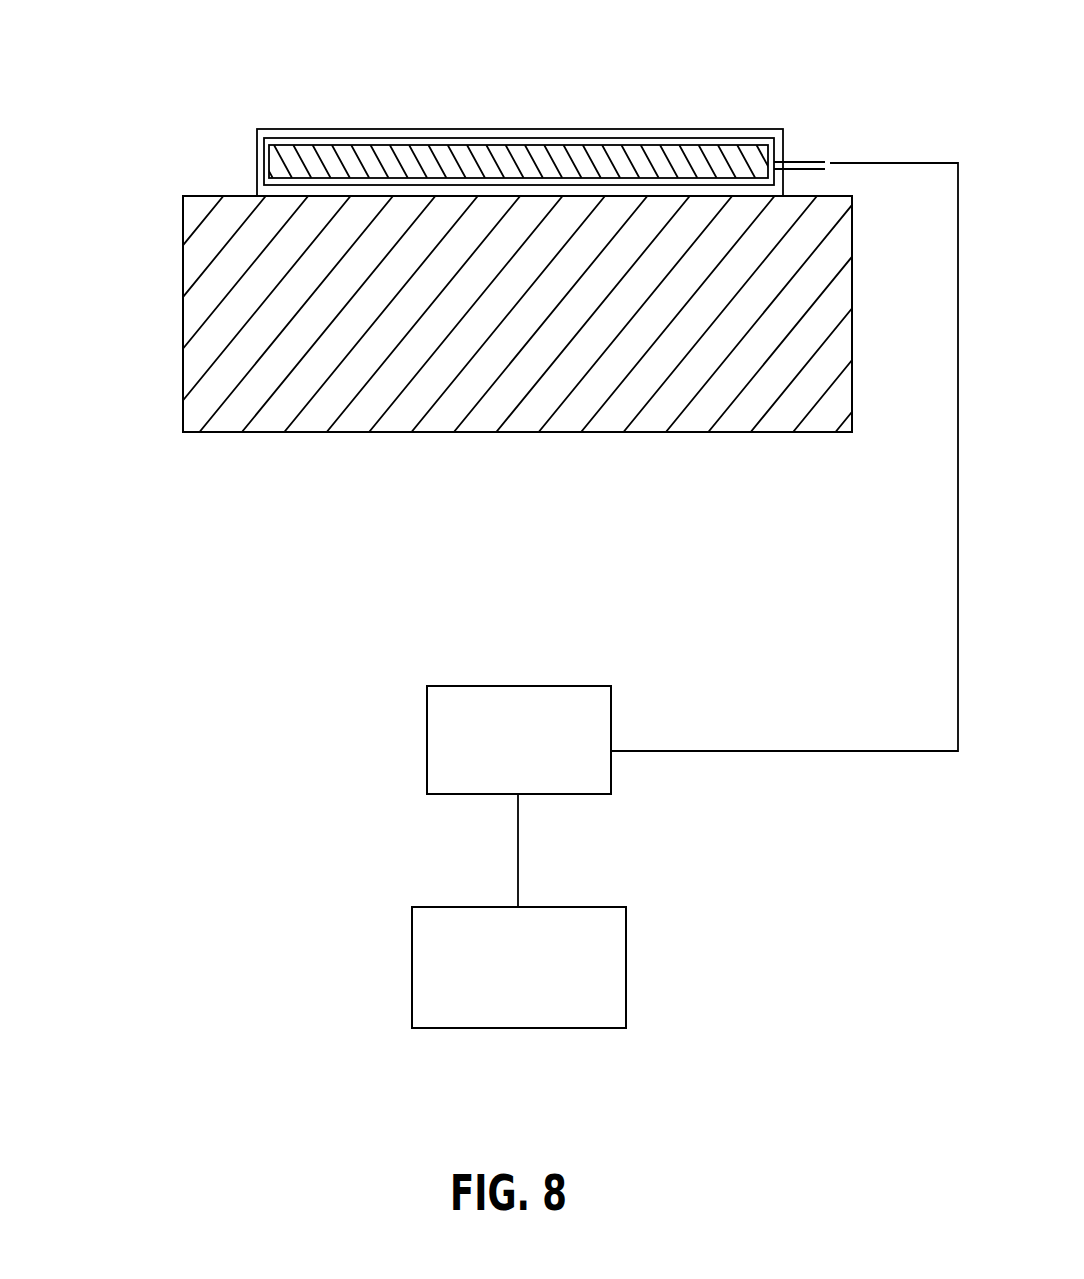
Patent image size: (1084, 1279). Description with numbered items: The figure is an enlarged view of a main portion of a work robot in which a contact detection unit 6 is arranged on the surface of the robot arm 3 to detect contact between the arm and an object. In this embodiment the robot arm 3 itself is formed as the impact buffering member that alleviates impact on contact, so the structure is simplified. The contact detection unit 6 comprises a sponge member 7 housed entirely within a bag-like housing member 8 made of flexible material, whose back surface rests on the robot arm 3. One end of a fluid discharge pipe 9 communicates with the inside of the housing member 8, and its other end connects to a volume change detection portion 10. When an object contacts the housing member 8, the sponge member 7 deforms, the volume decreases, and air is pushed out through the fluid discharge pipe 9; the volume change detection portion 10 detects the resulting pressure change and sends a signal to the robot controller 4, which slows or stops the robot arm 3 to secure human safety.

The robot arm 3 is at (220, 321).
The robot controller 4 is at (412, 953).
The contact detection unit 6 is at (394, 119).
The sponge member 7 is at (620, 158).
The housing member 8 is at (510, 129).
The fluid discharge pipe 9 is at (812, 160).
The volume change detection portion 10 is at (427, 740).